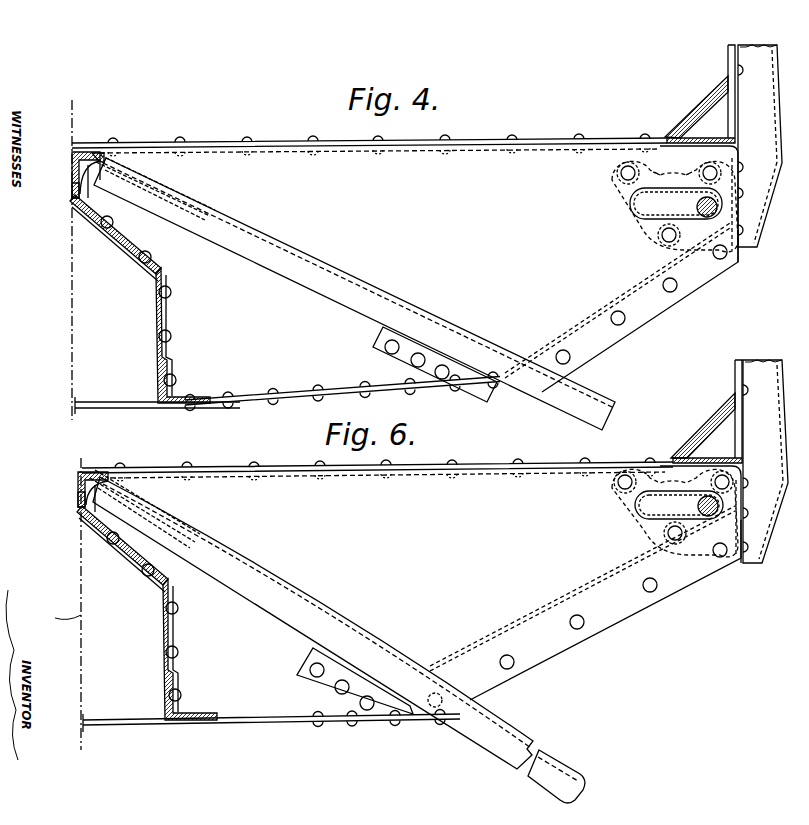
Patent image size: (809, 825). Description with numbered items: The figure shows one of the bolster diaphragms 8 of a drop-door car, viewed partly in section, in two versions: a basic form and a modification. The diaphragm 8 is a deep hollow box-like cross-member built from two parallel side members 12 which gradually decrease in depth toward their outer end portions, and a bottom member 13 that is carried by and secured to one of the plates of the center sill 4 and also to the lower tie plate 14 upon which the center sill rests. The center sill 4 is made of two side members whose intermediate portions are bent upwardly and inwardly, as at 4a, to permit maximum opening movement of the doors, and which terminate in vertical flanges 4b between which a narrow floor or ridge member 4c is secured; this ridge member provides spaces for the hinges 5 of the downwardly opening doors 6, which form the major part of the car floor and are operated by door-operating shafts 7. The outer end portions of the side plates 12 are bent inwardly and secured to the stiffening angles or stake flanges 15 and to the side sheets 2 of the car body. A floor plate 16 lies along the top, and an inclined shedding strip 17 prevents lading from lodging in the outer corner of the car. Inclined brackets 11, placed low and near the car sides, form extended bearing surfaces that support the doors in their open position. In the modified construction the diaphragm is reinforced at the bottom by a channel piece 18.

In FIG. 4, the side sheet 2 is at (728, 54).
In FIG. 6, the side sheet 2 is at (735, 371).
In FIG. 4, the center sill 4 is at (157, 317).
In FIG. 6, the center sill 4 is at (163, 638).
In FIG. 4, the bent intermediate portion of center sill 4a is at (123, 240).
In FIG. 6, the bent intermediate portion of center sill 4a is at (128, 560).
In FIG. 4, the vertical flange 4b is at (72, 194).
In FIG. 6, the vertical flange 4b is at (78, 503).
In FIG. 4, the ridge member 4c is at (72, 156).
In FIG. 6, the ridge member 4c is at (78, 480).
In FIG. 4, the hinge 5 is at (102, 153).
In FIG. 4, the door 6 is at (333, 266).
In FIG. 6, the door 6 is at (347, 628).
In FIG. 4, the door-operating shaft 7 is at (696, 208).
In FIG. 6, the door-operating shaft 7 is at (698, 507).
In FIG. 4, the bolster diaphragm 8 is at (369, 135).
In FIG. 6, the bolster diaphragm 8 is at (377, 459).
In FIG. 4, the bracket 11 is at (382, 346).
In FIG. 6, the bracket 11 is at (322, 684).
In FIG. 4, the side member 12 is at (641, 213).
In FIG. 6, the side member 12 is at (638, 514).
In FIG. 4, the bottom member 13 is at (580, 327).
In FIG. 4, the lower tie plate 14 is at (258, 404).
In FIG. 4, the stiffening angle 15 is at (760, 146).
In FIG. 6, the stiffening angle 15 is at (765, 461).
In FIG. 4, the floor plate 16 is at (552, 147).
In FIG. 6, the floor plate 16 is at (560, 470).
In FIG. 4, the inclined shedding strip 17 is at (700, 110).
In FIG. 6, the inclined shedding strip 17 is at (706, 434).
In FIG. 6, the channel piece 18 is at (535, 627).